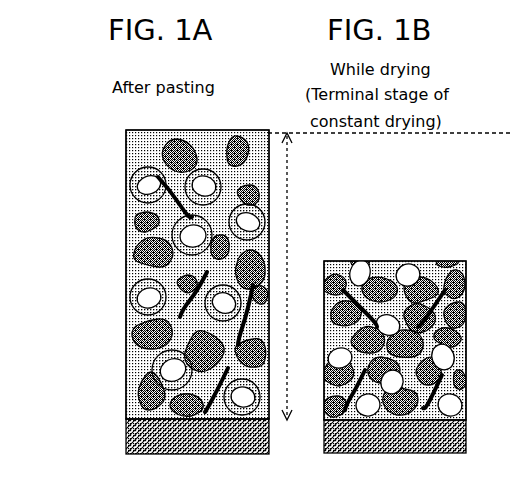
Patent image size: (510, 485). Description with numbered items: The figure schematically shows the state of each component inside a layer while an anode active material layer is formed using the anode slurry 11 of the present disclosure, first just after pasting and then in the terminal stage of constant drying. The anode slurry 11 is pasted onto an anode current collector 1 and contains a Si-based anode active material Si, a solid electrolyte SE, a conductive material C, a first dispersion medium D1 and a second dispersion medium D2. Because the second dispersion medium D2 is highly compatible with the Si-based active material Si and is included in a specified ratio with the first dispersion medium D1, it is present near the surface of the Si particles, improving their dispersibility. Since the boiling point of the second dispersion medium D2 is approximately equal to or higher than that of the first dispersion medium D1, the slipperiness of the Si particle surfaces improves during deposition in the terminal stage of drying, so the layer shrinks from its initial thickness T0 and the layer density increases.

In FIG. 1A, the anode slurry 11 is at (50, 153).
In FIG. 1B, the anode slurry 11 is at (394, 338).
In FIG. 1A, the anode current collector 1 is at (126, 441).
In FIG. 1B, the anode current collector 1 is at (395, 436).
In FIG. 1A, the first dispersion medium D1 is at (147, 148).
In FIG. 1A, the second dispersion medium D2 is at (128, 292).
In FIG. 1A, the Si-based anode active material Si is at (135, 197).
In FIG. 1A, the solid electrolyte SE is at (135, 252).
In FIG. 1A, the conductive material C is at (170, 322).
In FIG. 1A, the layer thickness after pasting T0 is at (389, 276).